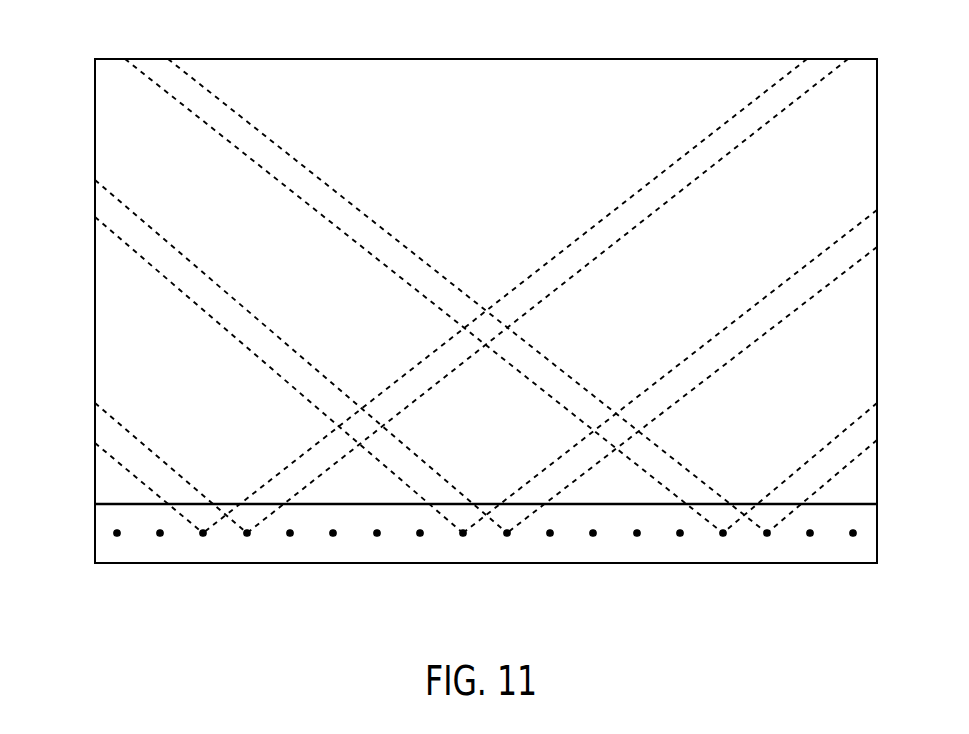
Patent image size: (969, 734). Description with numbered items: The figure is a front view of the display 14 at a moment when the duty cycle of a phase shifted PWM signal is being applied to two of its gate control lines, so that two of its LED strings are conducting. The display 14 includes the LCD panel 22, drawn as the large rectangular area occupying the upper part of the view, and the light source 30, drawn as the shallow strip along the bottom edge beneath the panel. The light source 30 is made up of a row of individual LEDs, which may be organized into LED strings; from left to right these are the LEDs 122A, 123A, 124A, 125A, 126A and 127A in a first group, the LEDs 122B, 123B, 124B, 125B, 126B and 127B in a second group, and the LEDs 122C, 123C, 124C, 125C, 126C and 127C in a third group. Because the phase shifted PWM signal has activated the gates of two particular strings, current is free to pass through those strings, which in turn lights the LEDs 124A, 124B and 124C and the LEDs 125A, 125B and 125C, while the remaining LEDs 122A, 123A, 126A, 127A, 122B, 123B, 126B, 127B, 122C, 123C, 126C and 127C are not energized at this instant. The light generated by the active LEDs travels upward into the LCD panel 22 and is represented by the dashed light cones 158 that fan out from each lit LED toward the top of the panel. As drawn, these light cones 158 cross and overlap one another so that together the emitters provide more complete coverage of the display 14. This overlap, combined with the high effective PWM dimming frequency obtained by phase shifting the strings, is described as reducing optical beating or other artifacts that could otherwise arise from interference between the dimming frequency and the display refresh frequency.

The display 14 is at (763, 37).
The LCD panel 22 is at (590, 38).
The light source 30 is at (98, 531).
The light cones 158 is at (208, 466).
The LED 122A is at (117, 539).
The LED 123A is at (158, 539).
The LED 124A is at (203, 539).
The LED 125A is at (245, 539).
The LED 126A is at (288, 539).
The LED 127A is at (331, 539).
The LED 122B is at (377, 539).
The LED 123B is at (418, 539).
The LED 124B is at (463, 539).
The LED 125B is at (505, 539).
The LED 126B is at (548, 539).
The LED 127B is at (591, 539).
The LED 122C is at (637, 539).
The LED 123C is at (678, 539).
The LED 124C is at (723, 539).
The LED 125C is at (765, 539).
The LED 126C is at (808, 539).
The LED 127C is at (851, 539).